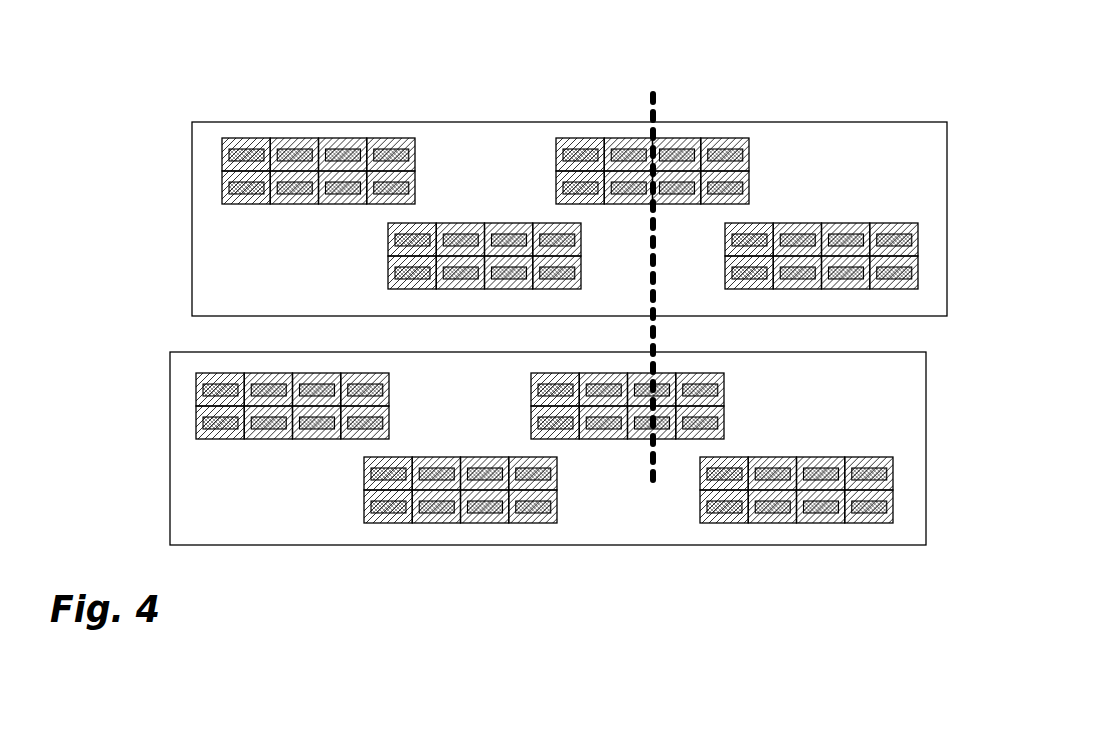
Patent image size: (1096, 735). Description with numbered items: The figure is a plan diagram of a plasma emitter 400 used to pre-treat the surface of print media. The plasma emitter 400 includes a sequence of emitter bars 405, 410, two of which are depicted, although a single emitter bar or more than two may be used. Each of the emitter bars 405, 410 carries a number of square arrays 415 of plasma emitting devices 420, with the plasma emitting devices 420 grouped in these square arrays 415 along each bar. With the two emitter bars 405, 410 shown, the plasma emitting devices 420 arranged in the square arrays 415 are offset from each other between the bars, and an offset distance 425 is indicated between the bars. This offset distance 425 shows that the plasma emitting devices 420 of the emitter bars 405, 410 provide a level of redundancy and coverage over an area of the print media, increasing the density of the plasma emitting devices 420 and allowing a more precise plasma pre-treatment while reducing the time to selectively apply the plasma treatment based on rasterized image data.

The plasma emitter 400 is at (104, 52).
The emitter bar 405 is at (209, 156).
The emitter bar 410 is at (180, 382).
The square array 415 is at (198, 138).
The plasma emitting device 420 is at (332, 138).
The offset distance 425 is at (650, 97).